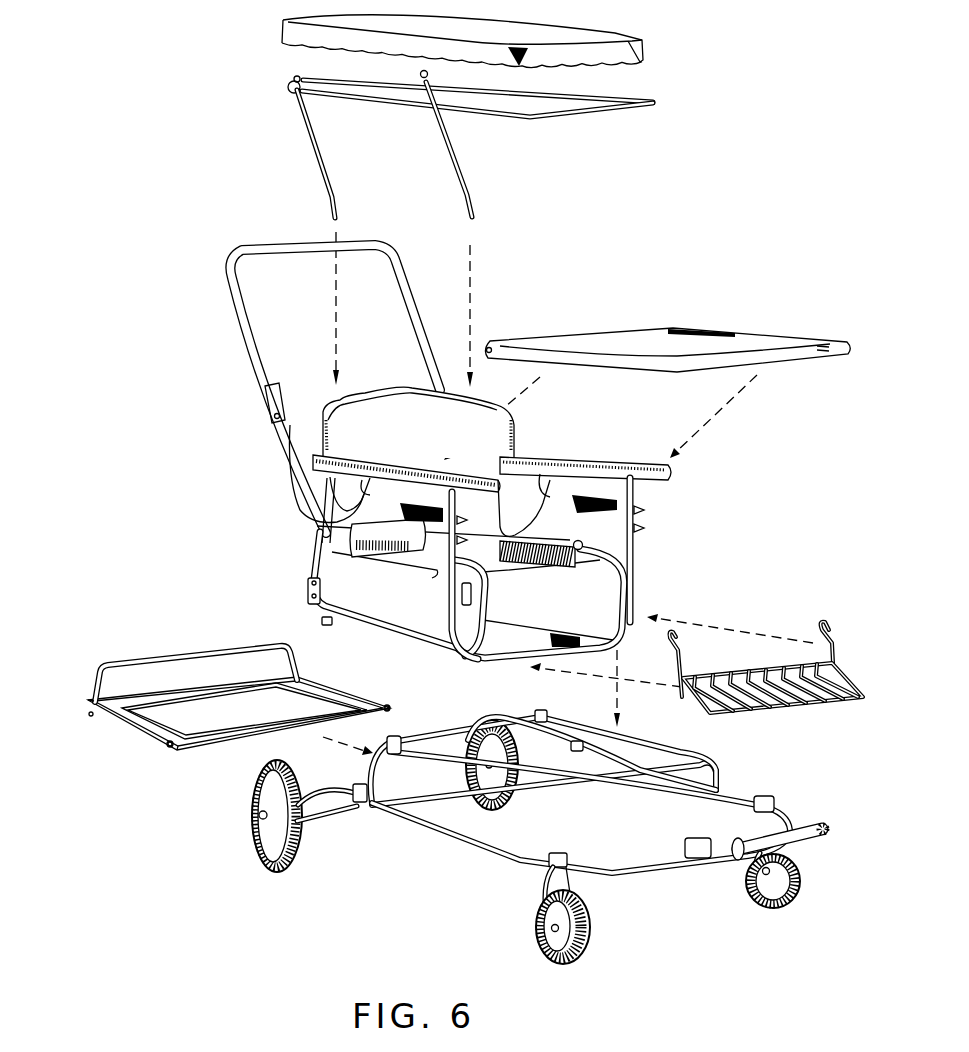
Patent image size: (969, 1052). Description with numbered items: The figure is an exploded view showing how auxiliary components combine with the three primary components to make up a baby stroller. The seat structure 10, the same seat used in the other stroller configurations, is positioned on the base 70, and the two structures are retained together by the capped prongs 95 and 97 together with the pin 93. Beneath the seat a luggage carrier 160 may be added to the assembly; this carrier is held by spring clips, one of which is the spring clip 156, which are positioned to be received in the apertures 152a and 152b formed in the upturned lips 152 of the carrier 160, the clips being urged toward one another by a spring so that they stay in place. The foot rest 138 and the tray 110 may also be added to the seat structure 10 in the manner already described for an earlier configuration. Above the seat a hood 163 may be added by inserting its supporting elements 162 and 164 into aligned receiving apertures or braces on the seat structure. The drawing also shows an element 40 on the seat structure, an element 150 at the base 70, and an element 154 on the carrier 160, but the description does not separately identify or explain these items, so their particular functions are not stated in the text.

The seat structure 10 is at (583, 612).
The backrest 40 is at (328, 330).
The base 70 is at (539, 821).
The pin 93 is at (597, 767).
The capped prong 95 is at (402, 740).
The capped prong 97 is at (545, 710).
The tray 110 is at (720, 333).
The foot rest 138 is at (777, 710).
The handle 150 is at (747, 864).
The upturned lip 152 is at (105, 725).
The aperture 152a is at (168, 750).
The aperture 152b is at (388, 706).
The tray rail 154 is at (165, 660).
The spring clip 156 is at (358, 803).
The luggage carrier 160 is at (247, 725).
The supporting element 162 is at (337, 193).
The hood 163 is at (470, 108).
The supporting element 164 is at (467, 182).